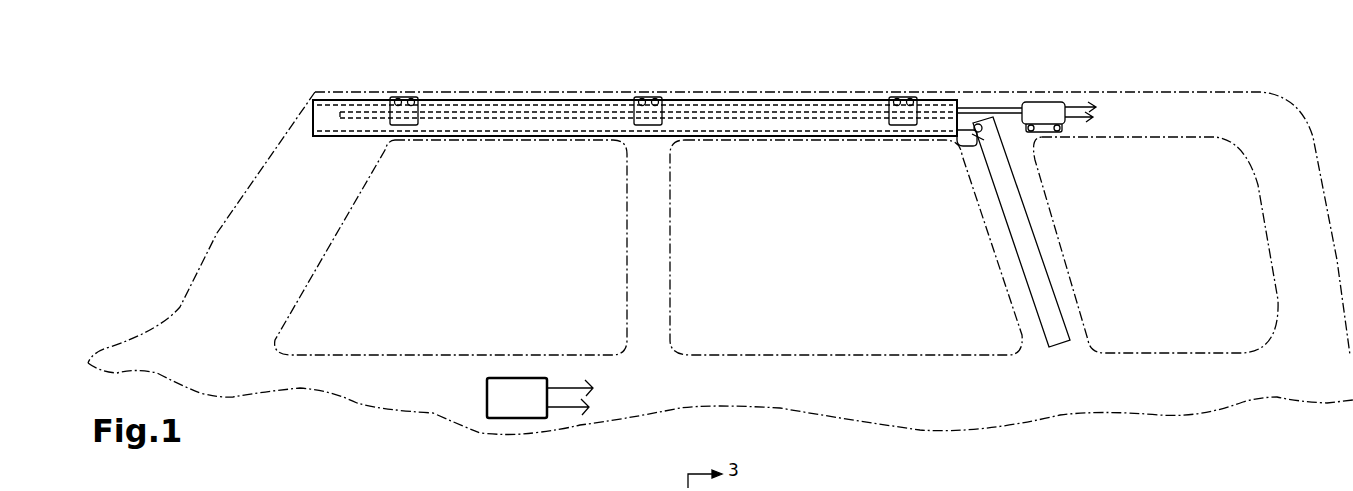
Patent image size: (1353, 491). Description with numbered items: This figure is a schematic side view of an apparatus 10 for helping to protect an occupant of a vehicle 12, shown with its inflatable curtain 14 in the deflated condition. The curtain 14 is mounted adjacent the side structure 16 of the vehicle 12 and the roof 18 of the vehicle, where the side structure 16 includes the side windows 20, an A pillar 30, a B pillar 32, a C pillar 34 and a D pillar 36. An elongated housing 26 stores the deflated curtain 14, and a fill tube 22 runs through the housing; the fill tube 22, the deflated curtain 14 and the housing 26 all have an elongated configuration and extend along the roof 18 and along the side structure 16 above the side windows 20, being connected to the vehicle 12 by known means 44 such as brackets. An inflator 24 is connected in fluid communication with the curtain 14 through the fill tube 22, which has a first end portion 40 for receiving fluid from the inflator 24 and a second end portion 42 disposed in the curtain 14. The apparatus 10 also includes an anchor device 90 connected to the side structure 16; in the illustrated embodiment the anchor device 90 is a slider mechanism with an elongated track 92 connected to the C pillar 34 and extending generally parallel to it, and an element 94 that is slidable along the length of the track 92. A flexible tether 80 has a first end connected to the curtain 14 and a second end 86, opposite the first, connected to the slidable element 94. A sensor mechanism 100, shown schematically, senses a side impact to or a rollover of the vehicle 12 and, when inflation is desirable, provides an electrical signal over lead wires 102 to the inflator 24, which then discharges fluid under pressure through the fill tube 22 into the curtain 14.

The apparatus 10 is at (290, 83).
The vehicle 12 is at (248, 117).
The inflatable curtain 14 is at (543, 100).
The side structure 16 is at (348, 406).
The roof 18 is at (1148, 90).
The side windows 20 is at (283, 305).
The fill tube 22 is at (982, 110).
The inflator 24 is at (1050, 104).
The housing 26 is at (785, 100).
The A pillar 30 is at (222, 242).
The B pillar 32 is at (645, 247).
The C pillar 34 is at (1048, 188).
The D pillar 36 is at (1290, 232).
The first end portion 40 is at (1008, 108).
The second end portion 42 is at (478, 100).
The known means 44 is at (403, 97).
The tether 80 is at (963, 146).
The second end 86 is at (976, 160).
The anchor device 90 is at (1035, 222).
The track 92 is at (1045, 262).
The element 94 is at (976, 168).
The sensor mechanism 100 is at (508, 404).
The lead wires 102 is at (1080, 104).